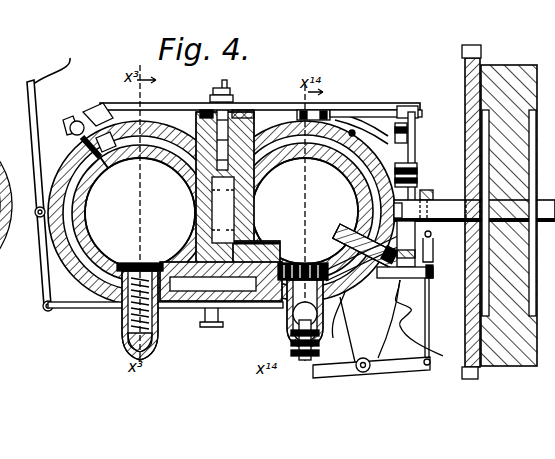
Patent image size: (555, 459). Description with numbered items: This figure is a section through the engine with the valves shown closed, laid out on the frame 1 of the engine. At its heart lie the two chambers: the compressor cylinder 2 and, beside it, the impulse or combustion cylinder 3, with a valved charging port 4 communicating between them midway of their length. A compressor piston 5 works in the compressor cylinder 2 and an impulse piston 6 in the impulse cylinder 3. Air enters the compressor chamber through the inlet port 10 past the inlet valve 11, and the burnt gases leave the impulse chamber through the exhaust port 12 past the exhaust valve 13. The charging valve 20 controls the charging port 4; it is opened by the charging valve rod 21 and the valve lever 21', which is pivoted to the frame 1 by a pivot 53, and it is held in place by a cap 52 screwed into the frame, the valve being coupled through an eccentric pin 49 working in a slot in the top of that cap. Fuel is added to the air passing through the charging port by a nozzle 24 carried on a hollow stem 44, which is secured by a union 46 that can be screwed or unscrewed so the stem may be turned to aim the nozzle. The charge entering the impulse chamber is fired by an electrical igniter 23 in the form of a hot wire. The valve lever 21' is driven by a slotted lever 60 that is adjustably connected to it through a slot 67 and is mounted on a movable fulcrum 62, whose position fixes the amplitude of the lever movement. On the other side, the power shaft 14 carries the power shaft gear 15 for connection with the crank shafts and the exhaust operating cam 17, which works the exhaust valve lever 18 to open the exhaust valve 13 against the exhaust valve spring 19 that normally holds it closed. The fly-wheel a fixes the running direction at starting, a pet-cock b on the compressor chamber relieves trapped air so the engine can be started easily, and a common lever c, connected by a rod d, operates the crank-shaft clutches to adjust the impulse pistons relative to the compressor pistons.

The frame 1 is at (338, 128).
The compressor cylinder 2 is at (86, 209).
The impulse cylinder 3 is at (350, 182).
The charging port 4 is at (252, 195).
The compressor piston 5 is at (160, 192).
The impulse piston 6 is at (285, 218).
The inlet port 10 is at (112, 312).
The inlet valve 11 is at (140, 213).
The exhaust port 12 is at (297, 318).
The exhaust valve 13 is at (305, 268).
The power shaft 14 is at (446, 206).
The power shaft gear 15 is at (465, 70).
The exhaust operating cam 17 is at (440, 240).
The exhaust valve lever 18 is at (389, 368).
The exhaust valve spring 19 is at (291, 342).
The charging valve 20 is at (212, 229).
The charging valve rod 21 is at (260, 97).
The valve lever 21' is at (376, 95).
The electrical igniter 23 is at (360, 240).
The nozzle 24 is at (205, 198).
The hollow stem 44 is at (190, 165).
The union 46 is at (232, 95).
The pin 49 is at (140, 206).
The cap 52 is at (202, 112).
The pivot 53 is at (316, 105).
The slotted lever 60 is at (416, 141).
The movable fulcrum 62 is at (417, 172).
The slot 67 is at (414, 113).
The fly-wheel a is at (506, 65).
The pet-cock b is at (83, 112).
The common lever c is at (52, 63).
The rod d is at (75, 308).